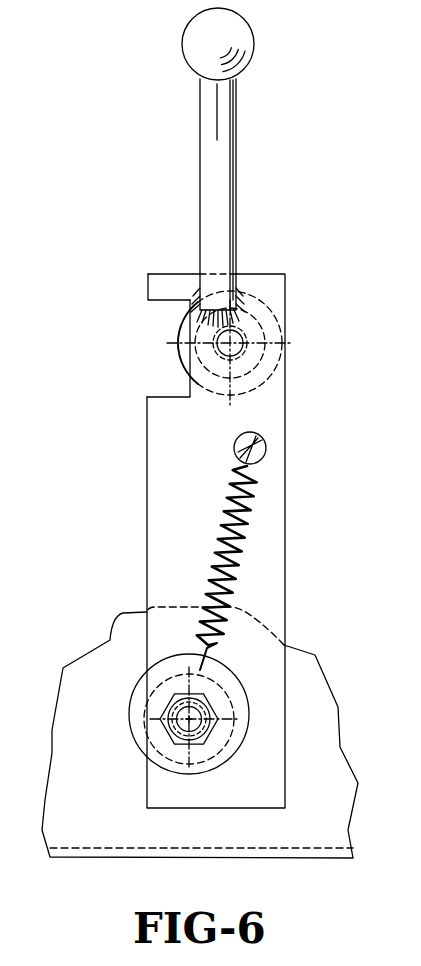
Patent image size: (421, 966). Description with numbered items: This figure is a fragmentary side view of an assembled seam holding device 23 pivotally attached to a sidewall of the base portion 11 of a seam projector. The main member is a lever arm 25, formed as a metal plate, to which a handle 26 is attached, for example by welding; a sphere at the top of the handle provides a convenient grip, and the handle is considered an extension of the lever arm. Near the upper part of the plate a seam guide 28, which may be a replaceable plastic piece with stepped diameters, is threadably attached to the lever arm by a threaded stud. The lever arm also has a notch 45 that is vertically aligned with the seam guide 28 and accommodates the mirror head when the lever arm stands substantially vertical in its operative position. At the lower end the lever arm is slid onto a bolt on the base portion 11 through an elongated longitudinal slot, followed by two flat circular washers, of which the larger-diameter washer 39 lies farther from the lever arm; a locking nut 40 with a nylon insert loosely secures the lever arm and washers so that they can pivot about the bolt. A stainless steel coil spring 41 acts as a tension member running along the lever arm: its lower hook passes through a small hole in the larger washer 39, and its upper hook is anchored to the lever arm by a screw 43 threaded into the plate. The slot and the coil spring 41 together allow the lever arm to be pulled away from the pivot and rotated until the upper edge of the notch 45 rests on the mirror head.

The base portion 11 is at (120, 838).
The seam holding device 23 is at (298, 192).
The lever arm 25 is at (270, 406).
The handle 26 is at (200, 158).
The seam guide 28 is at (180, 332).
The flat circular washer 39 is at (138, 702).
The locking nut 40 is at (170, 733).
The coil spring 41 is at (237, 558).
The screw 43 is at (266, 442).
The notch 45 is at (168, 386).